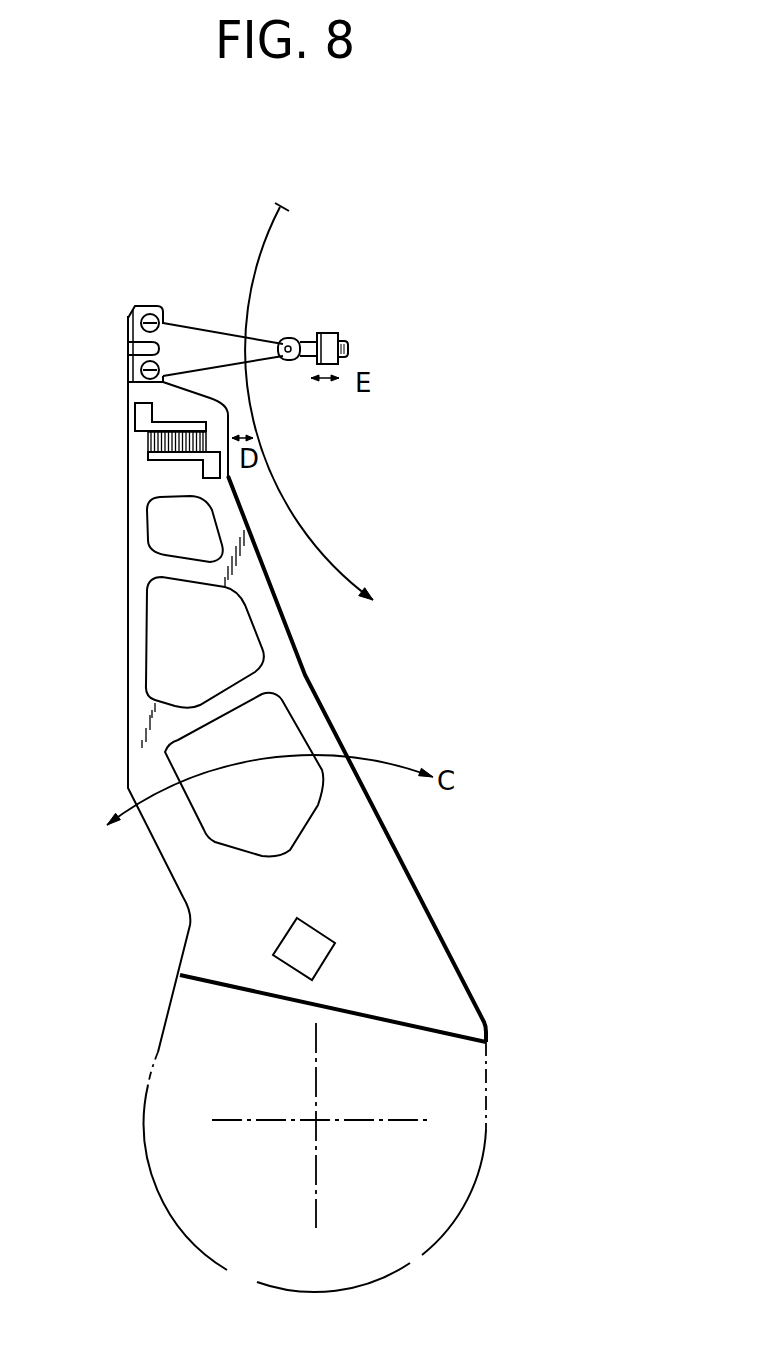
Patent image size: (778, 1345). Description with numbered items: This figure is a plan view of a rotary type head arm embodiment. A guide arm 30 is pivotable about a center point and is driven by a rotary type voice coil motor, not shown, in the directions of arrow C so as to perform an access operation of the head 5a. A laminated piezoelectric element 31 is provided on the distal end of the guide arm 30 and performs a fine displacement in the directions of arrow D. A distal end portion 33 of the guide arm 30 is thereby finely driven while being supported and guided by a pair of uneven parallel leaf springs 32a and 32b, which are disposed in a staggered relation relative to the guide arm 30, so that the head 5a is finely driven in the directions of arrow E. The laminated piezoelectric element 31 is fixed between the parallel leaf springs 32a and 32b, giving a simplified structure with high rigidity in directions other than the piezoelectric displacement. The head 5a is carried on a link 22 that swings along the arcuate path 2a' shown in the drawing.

The arcuate path of pin 2a' is at (264, 397).
The link arm 22 is at (200, 340).
The head 5a is at (327, 335).
The distal end portion 33 is at (142, 393).
The parallel leaf spring 32a is at (128, 427).
The laminated piezoelectric element 31 is at (143, 445).
The parallel leaf spring 32b is at (228, 473).
The guide arm 30 is at (317, 700).